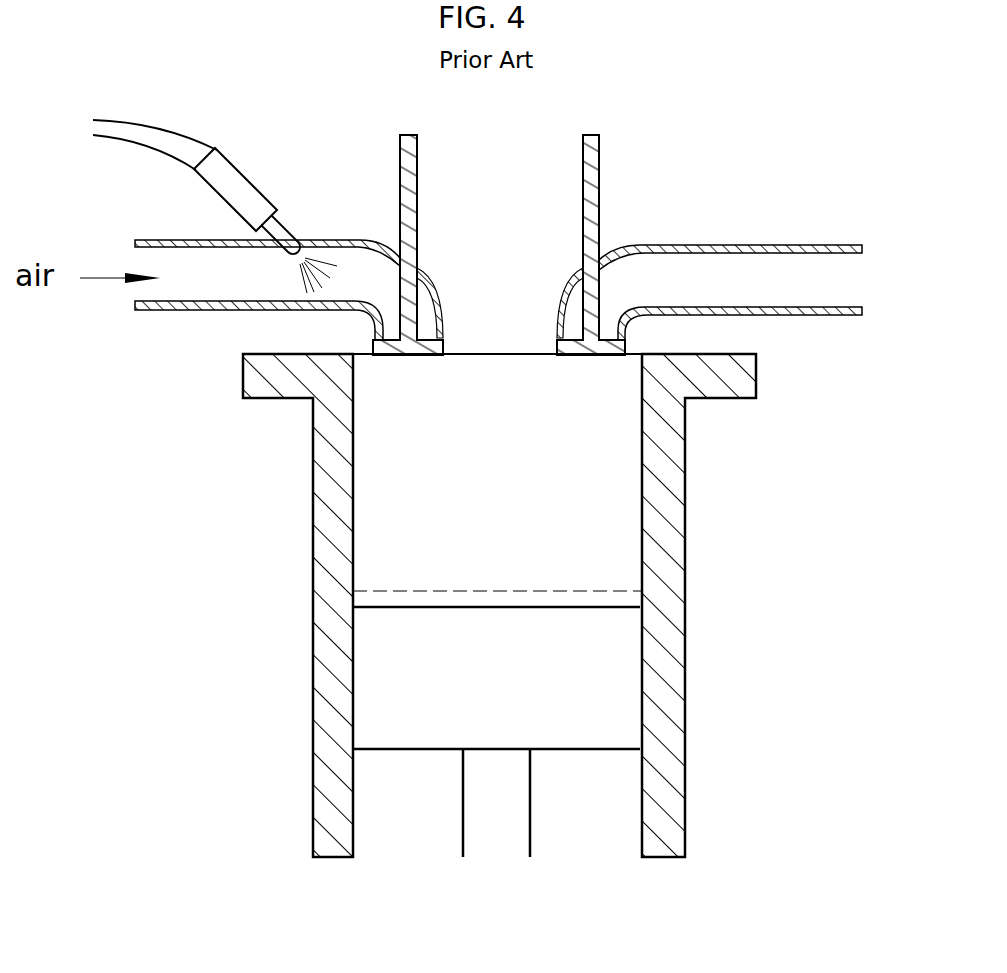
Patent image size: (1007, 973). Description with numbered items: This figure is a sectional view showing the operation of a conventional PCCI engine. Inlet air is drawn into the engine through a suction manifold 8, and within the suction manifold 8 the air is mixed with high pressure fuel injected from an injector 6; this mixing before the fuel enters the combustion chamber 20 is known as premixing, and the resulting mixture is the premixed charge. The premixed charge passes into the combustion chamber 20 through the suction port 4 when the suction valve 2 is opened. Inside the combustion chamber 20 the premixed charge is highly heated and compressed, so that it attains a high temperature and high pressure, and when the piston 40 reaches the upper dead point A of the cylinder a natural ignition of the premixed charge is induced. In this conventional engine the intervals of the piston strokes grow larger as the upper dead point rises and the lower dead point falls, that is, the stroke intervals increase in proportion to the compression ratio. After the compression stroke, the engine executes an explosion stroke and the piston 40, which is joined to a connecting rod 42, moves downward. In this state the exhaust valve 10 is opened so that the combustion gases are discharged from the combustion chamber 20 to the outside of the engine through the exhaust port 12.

The suction valve 2 is at (405, 147).
The suction port 4 is at (366, 260).
The injector 6 is at (242, 190).
The suction manifold 8 is at (215, 288).
The exhaust valve 10 is at (601, 202).
The exhaust port 12 is at (675, 270).
The combustion chamber 20 is at (607, 505).
The upper dead point A is at (593, 590).
The piston 40 is at (627, 691).
The connecting rod 42 is at (513, 802).